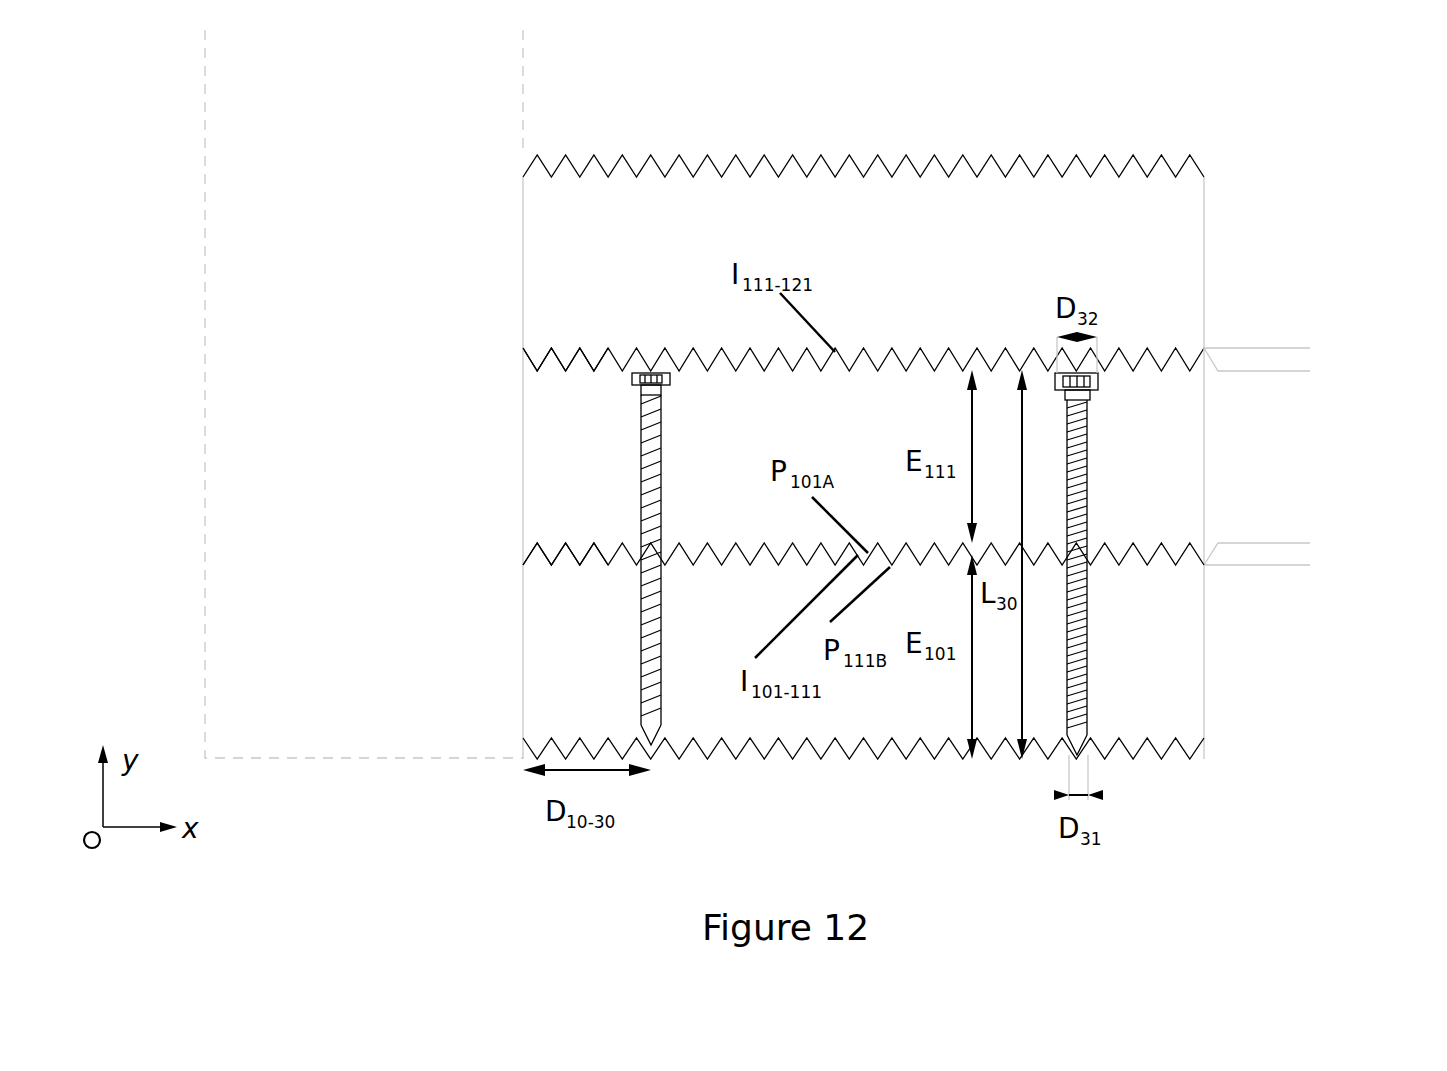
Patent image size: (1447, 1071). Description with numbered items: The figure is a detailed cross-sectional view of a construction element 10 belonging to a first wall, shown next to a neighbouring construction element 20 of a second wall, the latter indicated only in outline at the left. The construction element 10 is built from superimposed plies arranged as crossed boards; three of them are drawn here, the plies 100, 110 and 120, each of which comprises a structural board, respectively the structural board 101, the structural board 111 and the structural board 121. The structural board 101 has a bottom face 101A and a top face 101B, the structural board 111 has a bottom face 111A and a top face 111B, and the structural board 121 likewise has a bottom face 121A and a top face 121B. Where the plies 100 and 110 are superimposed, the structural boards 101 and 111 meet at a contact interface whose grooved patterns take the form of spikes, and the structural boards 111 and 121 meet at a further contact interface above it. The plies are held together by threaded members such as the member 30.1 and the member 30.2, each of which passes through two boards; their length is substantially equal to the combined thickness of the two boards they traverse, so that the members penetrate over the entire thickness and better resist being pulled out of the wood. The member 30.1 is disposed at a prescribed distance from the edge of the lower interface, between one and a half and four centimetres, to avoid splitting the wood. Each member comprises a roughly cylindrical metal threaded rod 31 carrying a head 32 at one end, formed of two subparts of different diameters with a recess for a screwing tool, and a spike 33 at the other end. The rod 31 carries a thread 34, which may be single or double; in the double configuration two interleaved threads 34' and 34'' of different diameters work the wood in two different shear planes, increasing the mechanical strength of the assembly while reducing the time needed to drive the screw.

The construction element 10 is at (854, 116).
The construction element 20 is at (170, 379).
The member 30.1 is at (656, 522).
The member 30.2 is at (1082, 527).
The metal threaded rod 31 is at (1100, 643).
The head 32 is at (672, 382).
The spike 33 is at (665, 737).
The thread 34 is at (1124, 565).
The thread 34' is at (687, 471).
The thread 34'' is at (691, 634).
The ply 100 is at (1318, 650).
The structural board 101 is at (835, 693).
The bottom face 101A is at (550, 563).
The top face 101B is at (848, 757).
The ply 110 is at (1318, 456).
The structural board 111 is at (839, 450).
The bottom face 111A is at (530, 362).
The top face 111B is at (530, 550).
The ply 120 is at (1318, 262).
The structural board 121 is at (828, 219).
The bottom face 121A is at (613, 168).
The top face 121B is at (550, 351).